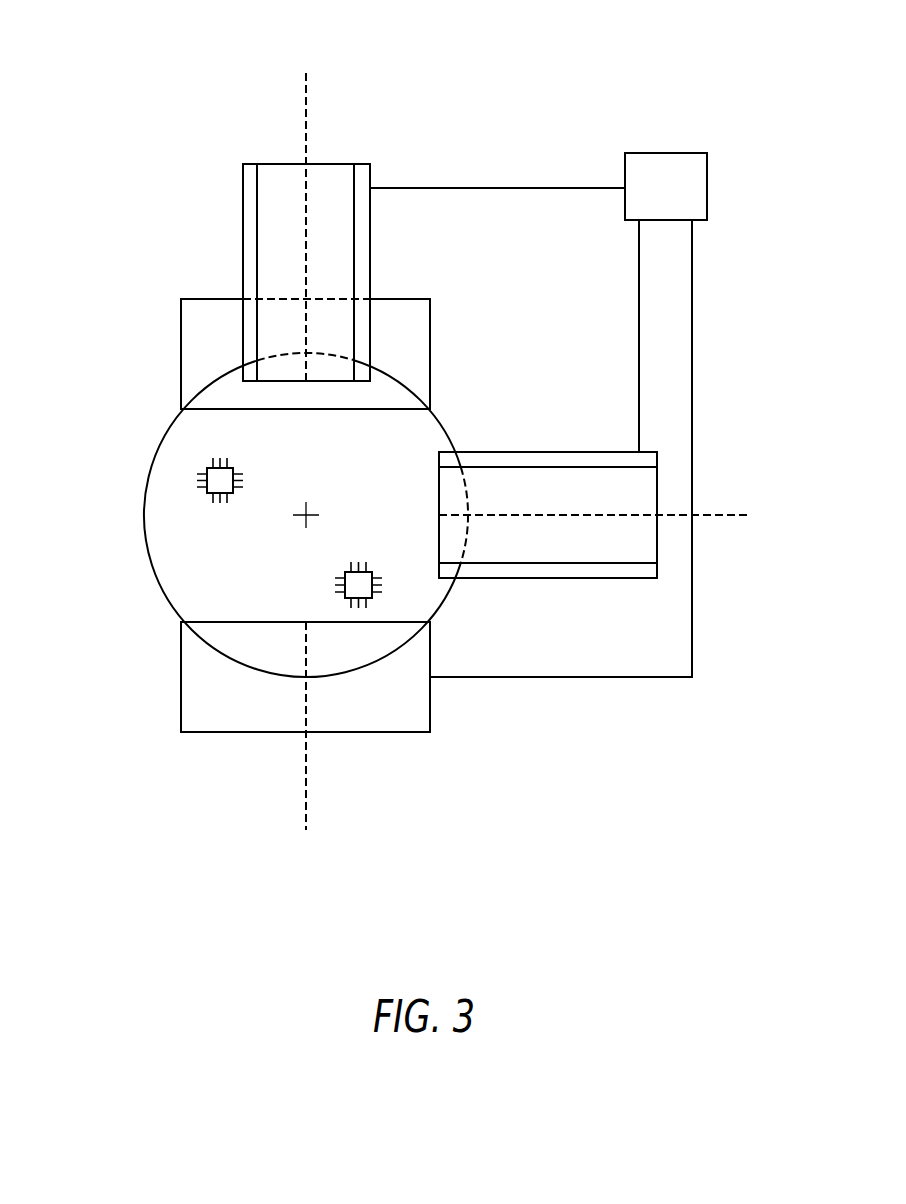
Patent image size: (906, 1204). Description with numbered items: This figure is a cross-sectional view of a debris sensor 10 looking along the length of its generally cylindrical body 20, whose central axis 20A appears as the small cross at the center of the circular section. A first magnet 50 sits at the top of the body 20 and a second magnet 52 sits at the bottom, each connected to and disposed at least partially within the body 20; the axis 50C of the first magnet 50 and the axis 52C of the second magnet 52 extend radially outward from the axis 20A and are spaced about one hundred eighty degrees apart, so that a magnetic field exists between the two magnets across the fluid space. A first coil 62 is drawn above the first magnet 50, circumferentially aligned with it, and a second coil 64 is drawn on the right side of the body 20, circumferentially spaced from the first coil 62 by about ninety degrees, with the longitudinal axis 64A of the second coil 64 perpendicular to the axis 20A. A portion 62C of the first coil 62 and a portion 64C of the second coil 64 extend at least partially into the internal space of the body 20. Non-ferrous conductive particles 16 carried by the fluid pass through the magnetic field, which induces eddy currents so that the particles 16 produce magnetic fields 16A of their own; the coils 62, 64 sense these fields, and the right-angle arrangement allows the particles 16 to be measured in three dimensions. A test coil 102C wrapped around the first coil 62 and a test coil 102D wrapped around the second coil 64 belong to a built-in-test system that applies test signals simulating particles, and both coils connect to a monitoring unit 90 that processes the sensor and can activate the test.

The debris sensor 10 is at (86, 118).
The non-ferrous conductive particles 16 is at (237, 466).
The magnetic fields of conductive particles 16A is at (216, 509).
The body 20 is at (143, 600).
The central axis 20A is at (304, 521).
The first magnet 50 is at (445, 338).
The axis of first magnet 50C is at (313, 94).
The second magnet 52 is at (405, 742).
The axis of second magnet 52C is at (319, 794).
The first coil 62 is at (373, 156).
The portion of first coil 62C is at (230, 372).
The second coil 64 is at (475, 442).
The longitudinal axis of second coil 64A is at (718, 523).
The portion of second coil 64C is at (446, 580).
The monitoring unit 90 is at (688, 153).
The test coil 102C is at (250, 264).
The test coil 102D is at (543, 457).